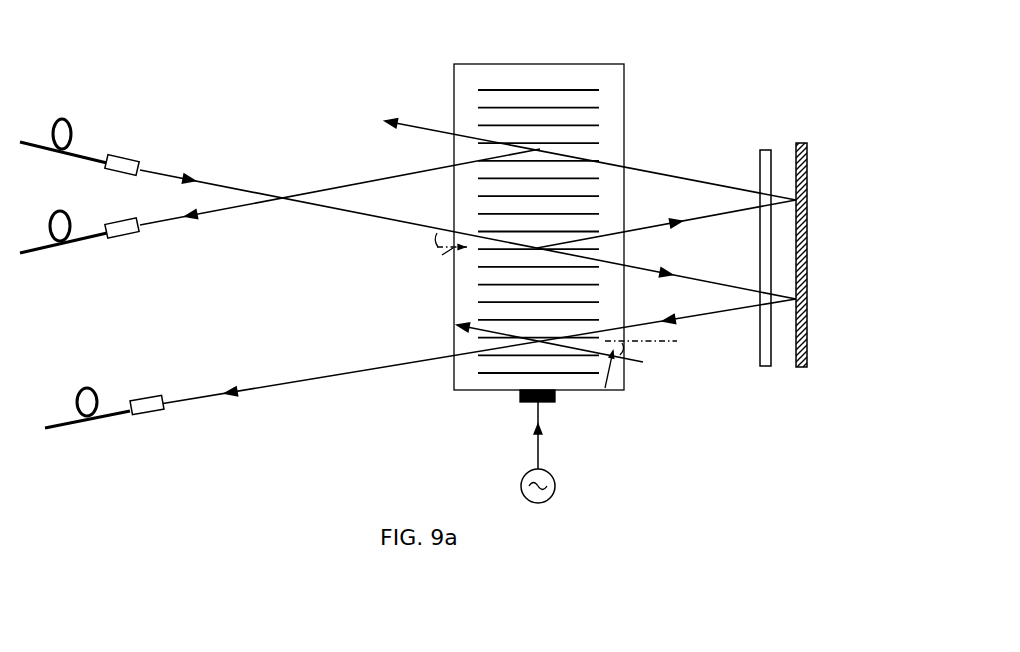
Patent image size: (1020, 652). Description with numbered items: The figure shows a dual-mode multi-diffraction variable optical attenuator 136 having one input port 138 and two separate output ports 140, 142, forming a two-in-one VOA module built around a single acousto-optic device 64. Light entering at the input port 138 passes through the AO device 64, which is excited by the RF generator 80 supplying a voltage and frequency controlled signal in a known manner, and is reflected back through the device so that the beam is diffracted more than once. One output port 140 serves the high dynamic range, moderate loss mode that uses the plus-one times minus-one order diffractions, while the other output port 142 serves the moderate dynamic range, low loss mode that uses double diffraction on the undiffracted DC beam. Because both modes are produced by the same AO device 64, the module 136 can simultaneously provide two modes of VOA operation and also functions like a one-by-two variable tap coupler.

The dual-mode multi-diffraction VOA 136 is at (368, 92).
The AO device 64 is at (583, 73).
The RF generator 80 is at (548, 478).
The input port 138 is at (88, 153).
The output port 140 is at (80, 245).
The output port 142 is at (110, 418).